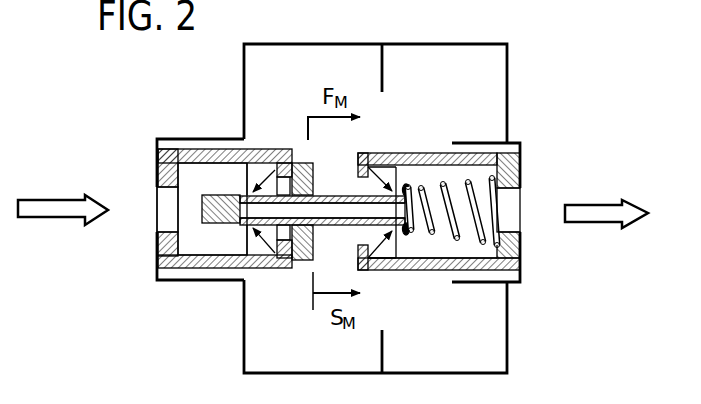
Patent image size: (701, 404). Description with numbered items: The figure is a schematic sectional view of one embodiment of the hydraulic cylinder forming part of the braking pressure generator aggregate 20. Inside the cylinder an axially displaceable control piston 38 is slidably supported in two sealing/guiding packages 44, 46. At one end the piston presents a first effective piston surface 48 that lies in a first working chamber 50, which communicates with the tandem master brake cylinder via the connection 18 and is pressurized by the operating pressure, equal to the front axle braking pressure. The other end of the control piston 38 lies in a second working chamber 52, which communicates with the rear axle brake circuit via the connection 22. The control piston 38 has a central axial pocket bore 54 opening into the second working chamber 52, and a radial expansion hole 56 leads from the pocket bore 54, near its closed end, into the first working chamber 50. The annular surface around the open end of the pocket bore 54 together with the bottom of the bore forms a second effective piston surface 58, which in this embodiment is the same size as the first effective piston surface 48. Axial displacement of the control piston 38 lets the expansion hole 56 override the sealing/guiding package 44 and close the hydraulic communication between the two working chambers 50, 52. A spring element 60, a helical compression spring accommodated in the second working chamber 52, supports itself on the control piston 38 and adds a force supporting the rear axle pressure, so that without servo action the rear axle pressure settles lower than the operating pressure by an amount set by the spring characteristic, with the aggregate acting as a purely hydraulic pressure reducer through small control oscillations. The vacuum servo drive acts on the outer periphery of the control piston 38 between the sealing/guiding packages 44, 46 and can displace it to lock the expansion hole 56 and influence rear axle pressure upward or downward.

The connection 18 is at (162, 220).
The braking pressure generator aggregate 20 is at (532, 90).
The connection 22 is at (517, 218).
The control piston 38 is at (318, 226).
The sealing/guiding package 44 is at (250, 163).
The sealing/guiding package 46 is at (388, 165).
The first effective piston surface 48 is at (200, 207).
The first working chamber 50 is at (218, 172).
The second working chamber 52 is at (445, 248).
The pocket bore 54 is at (342, 207).
The expansion hole 56 is at (248, 228).
The second effective piston surface 58 is at (410, 190).
The spring element 60 is at (430, 240).